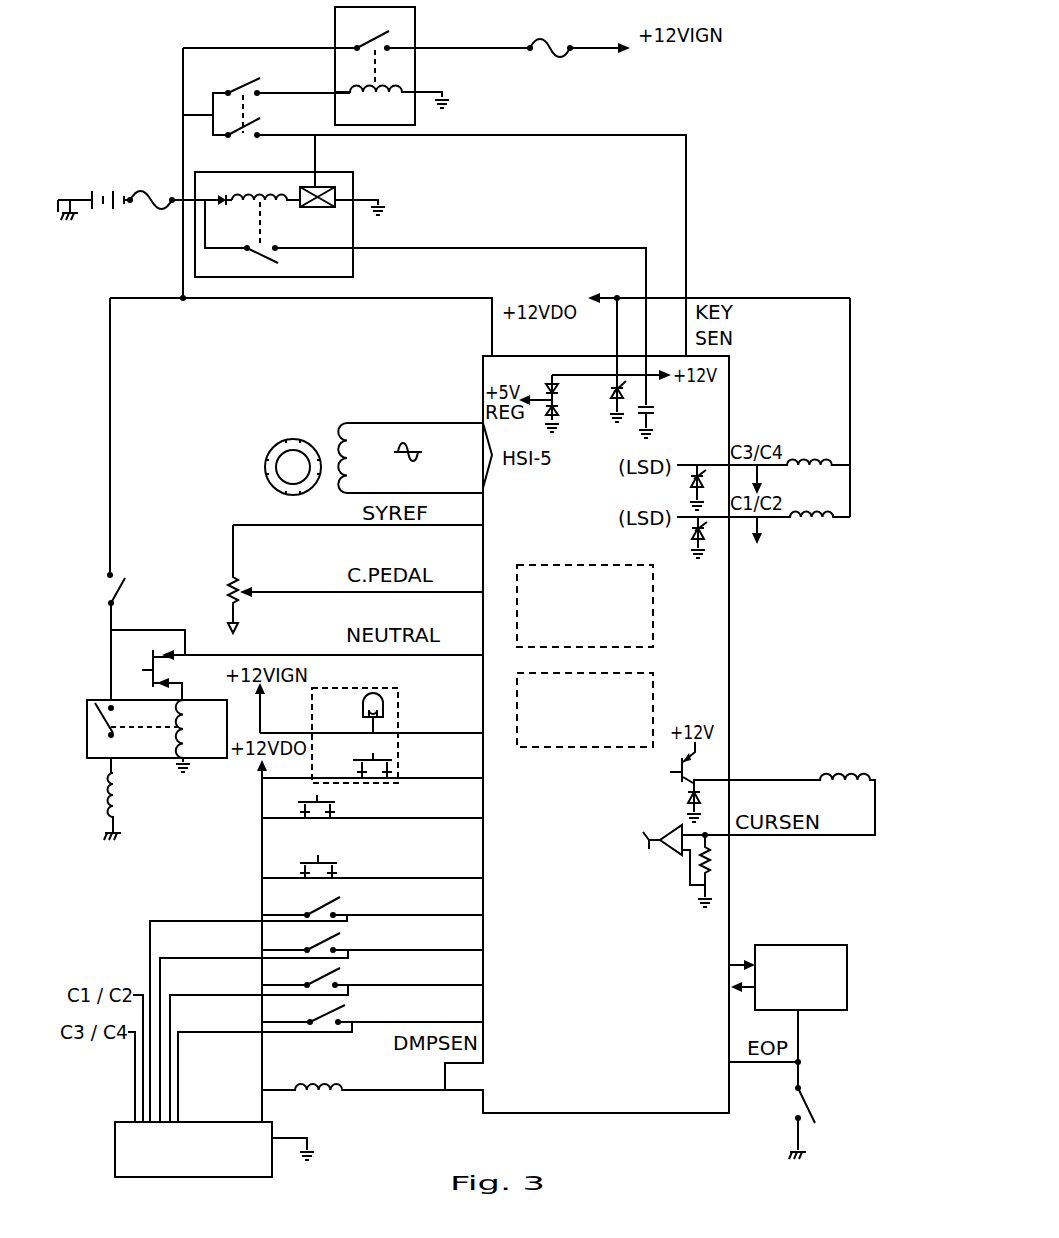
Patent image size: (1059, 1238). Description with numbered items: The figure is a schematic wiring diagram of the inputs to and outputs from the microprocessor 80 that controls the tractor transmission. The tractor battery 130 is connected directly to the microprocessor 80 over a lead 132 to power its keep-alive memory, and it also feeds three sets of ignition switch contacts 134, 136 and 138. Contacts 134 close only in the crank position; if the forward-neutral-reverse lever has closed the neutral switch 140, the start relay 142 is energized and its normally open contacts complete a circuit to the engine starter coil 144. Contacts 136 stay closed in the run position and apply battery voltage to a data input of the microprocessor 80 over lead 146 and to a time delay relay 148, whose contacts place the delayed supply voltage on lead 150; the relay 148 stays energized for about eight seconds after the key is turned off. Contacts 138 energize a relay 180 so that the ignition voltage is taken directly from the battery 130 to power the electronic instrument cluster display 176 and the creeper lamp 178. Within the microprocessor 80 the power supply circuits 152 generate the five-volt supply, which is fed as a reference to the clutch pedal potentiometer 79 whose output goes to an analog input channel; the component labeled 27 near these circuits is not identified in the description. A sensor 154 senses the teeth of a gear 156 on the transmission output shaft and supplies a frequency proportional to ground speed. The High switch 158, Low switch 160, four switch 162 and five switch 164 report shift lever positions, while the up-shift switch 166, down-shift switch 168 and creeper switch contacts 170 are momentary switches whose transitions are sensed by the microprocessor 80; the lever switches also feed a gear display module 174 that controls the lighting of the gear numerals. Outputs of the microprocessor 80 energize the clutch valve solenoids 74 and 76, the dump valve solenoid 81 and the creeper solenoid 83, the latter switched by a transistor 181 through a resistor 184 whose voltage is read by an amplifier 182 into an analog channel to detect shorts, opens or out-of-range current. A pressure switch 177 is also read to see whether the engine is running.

The relay 180 is at (415, 32).
The ignition switch contacts 138 is at (262, 80).
The ignition switch contacts 136 is at (240, 138).
The lead 146 is at (686, 232).
The tractor battery 130 is at (100, 213).
The time delay relay 148 is at (355, 232).
The lead 150 is at (625, 247).
The lead 132 is at (490, 342).
The microprocessor 80 is at (742, 622).
The zener diode 27 is at (566, 403).
The power supply circuits 152 is at (662, 387).
The solenoid 76 is at (803, 460).
The solenoid 74 is at (813, 522).
The sensor 154 is at (340, 446).
The gear 156 is at (278, 443).
The clutch pedal potentiometer 79 is at (240, 582).
The ignition switch contacts 134 is at (135, 570).
The switch 140 is at (177, 675).
The start relay 142 is at (205, 760).
The engine starter coil 144 is at (125, 793).
The creeper lamp 178 is at (362, 708).
The creeper switch contacts 170 is at (366, 760).
The switch 166 is at (316, 822).
The switch 168 is at (323, 857).
The High switch 158 is at (342, 901).
The Low switch 160 is at (342, 936).
The "4" switch 162 is at (342, 971).
The "5" switch 164 is at (347, 1008).
The solenoid 81 is at (312, 1085).
The gear display module 174 is at (272, 1167).
The transistor 181 is at (670, 772).
The solenoid 83 is at (818, 764).
The amplifier 182 is at (670, 855).
The resistor 184 is at (710, 856).
The electronic instrument cluster display 176 is at (778, 945).
The pressure switch 177 is at (805, 1107).